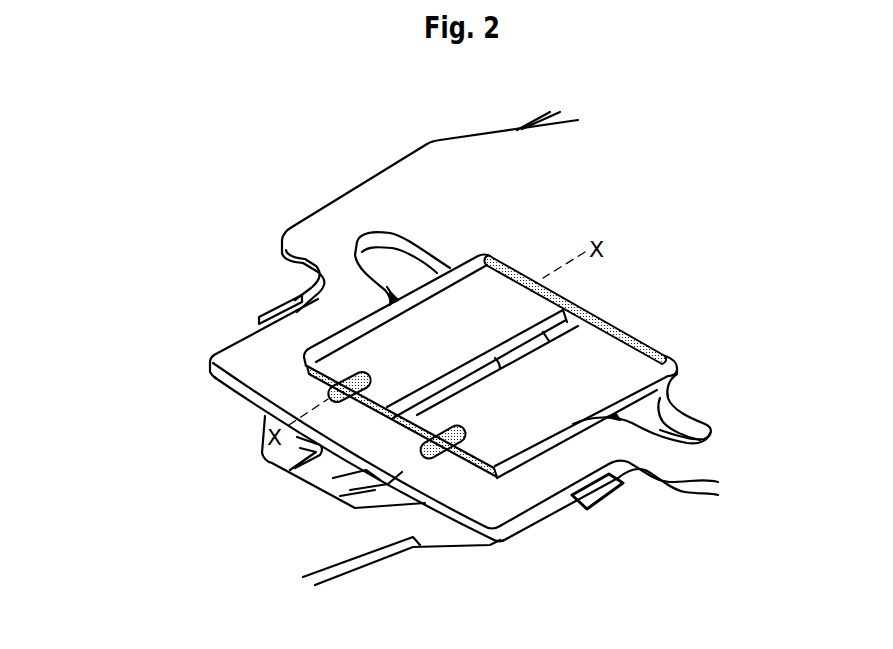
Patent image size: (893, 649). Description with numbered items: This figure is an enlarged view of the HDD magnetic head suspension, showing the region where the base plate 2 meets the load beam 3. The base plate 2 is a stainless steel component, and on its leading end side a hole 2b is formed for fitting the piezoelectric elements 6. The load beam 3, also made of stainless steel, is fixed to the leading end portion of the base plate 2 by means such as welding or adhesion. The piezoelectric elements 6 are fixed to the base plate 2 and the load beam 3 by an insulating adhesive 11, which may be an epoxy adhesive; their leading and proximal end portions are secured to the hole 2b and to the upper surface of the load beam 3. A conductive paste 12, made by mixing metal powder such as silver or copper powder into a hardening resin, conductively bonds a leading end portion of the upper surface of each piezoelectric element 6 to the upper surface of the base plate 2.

The base plate 2 is at (490, 152).
The hole 2b is at (546, 440).
The load beam 3 is at (327, 543).
The piezoelectric elements 6 is at (362, 353).
The insulating adhesive 11 is at (325, 372).
The conductive paste 12 is at (333, 385).